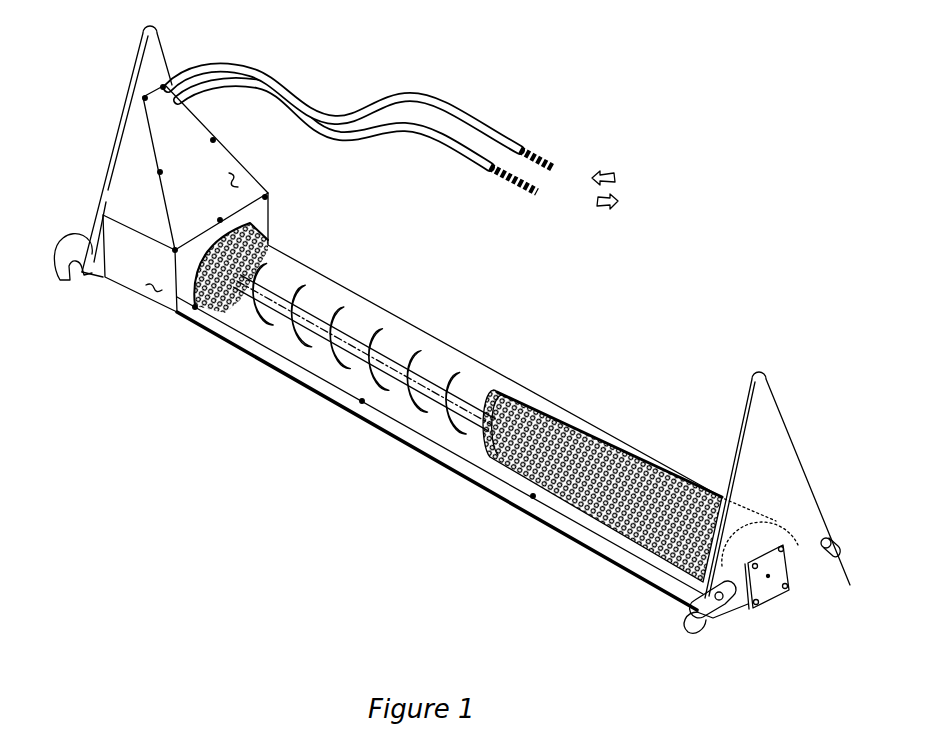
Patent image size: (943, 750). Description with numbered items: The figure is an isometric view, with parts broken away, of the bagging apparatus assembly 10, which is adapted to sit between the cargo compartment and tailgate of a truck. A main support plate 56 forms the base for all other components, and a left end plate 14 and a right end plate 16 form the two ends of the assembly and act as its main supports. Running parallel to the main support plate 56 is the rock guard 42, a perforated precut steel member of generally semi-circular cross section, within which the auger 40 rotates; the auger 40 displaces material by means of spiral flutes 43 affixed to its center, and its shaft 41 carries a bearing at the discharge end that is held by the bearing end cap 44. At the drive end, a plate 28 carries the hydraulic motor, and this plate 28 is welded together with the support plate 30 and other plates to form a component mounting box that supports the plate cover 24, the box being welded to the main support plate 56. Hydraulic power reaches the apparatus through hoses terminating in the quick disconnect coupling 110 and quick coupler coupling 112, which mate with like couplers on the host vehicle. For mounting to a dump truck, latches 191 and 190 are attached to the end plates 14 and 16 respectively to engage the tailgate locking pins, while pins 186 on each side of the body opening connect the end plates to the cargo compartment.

The bagging apparatus assembly 10 is at (293, 543).
The left end plate 14 is at (107, 163).
The right end plate 16 is at (743, 417).
The plate cover 24 is at (240, 180).
The plate 28 is at (147, 288).
The support plate 30 is at (270, 223).
The auger 40 is at (367, 355).
The shaft 41 is at (400, 357).
The rock guard 42 is at (560, 403).
The spiral flutes 43 is at (345, 357).
The bearing end cap 44 is at (772, 590).
The main support plate 56 is at (433, 462).
The quick disconnect coupling 110 is at (553, 168).
The quick coupler coupling 112 is at (535, 190).
The pin 186 is at (835, 557).
The latch 190 is at (685, 628).
The latch 191 is at (58, 277).